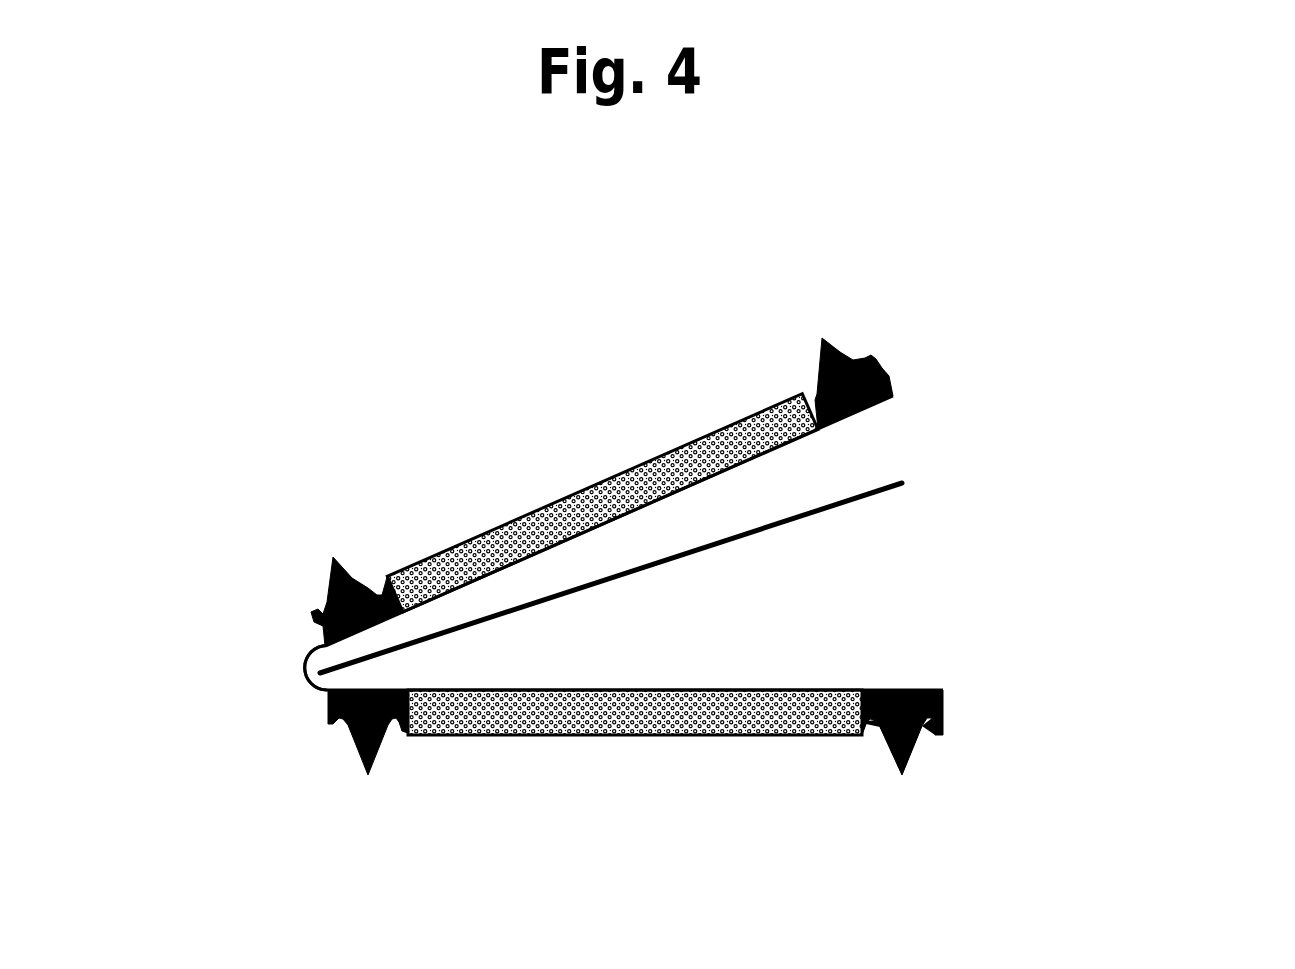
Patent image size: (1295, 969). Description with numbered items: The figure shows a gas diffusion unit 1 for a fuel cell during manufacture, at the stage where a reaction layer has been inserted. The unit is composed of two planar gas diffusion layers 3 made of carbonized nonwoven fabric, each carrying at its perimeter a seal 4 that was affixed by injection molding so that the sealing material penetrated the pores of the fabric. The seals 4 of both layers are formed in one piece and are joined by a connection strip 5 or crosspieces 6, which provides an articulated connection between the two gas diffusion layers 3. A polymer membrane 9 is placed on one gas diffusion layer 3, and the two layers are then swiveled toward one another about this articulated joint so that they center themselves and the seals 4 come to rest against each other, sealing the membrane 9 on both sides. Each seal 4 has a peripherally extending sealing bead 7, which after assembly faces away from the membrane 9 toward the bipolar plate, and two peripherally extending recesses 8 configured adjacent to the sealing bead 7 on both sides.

The gas diffusion unit 1 is at (1022, 382).
The gas diffusion layer 3 is at (680, 468).
The seal 4 is at (892, 387).
The connection strip 5 is at (237, 712).
The crosspiece 6 is at (303, 673).
The sealing bead 7 is at (912, 752).
The recess 8 is at (875, 733).
The membrane 9 is at (788, 527).